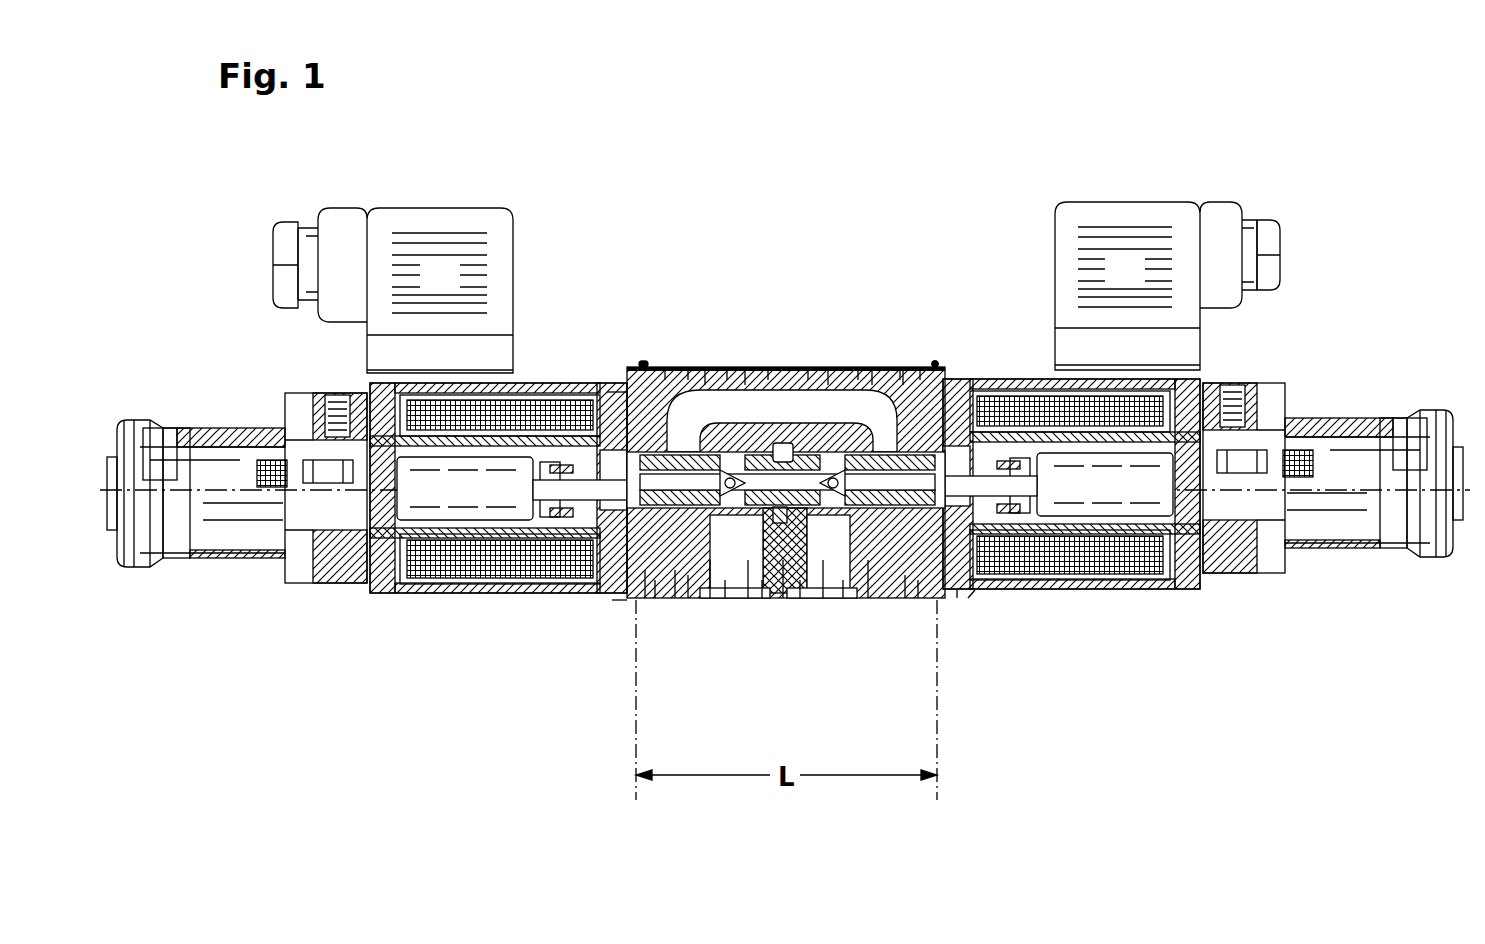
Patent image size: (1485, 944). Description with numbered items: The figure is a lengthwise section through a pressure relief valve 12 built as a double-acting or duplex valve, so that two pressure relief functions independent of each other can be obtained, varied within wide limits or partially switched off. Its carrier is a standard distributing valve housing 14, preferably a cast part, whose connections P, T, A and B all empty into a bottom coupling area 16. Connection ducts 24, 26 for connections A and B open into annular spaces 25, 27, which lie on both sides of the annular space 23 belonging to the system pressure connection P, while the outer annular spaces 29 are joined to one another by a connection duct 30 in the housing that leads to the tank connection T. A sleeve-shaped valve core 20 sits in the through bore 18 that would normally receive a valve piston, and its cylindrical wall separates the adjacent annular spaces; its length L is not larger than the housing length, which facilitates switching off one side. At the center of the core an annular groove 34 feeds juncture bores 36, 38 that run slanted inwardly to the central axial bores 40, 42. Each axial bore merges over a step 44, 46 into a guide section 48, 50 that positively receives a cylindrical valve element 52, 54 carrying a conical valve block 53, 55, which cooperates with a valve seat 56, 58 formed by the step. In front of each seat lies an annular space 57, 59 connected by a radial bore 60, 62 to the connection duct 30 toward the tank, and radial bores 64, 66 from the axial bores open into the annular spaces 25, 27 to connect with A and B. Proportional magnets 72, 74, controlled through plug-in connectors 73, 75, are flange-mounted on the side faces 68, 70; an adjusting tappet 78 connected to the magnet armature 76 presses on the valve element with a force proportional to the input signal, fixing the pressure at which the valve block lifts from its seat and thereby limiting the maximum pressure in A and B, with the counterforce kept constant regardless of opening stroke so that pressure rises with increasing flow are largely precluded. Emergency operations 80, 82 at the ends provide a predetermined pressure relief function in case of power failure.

The pressure relief valve 12 is at (787, 352).
The distributing valve housing 14 is at (874, 368).
The bottom coupling area 16 is at (783, 598).
The through bore 18 is at (725, 598).
The valve core 20 is at (843, 598).
The annular space 23 is at (762, 598).
The connection duct 24 is at (748, 598).
The annular space 25 is at (748, 368).
The connection duct 26 is at (823, 598).
The annular space 27 is at (830, 368).
The annular spaces 29 is at (688, 598).
The connection duct 30 is at (707, 368).
The annular groove 34 is at (800, 598).
The juncture bore 36 is at (768, 368).
The juncture bore 38 is at (809, 368).
The axial bore 40 is at (710, 598).
The axial bore 42 is at (868, 598).
The step 44 is at (689, 368).
The step 46 is at (900, 368).
The guide section 48 is at (645, 598).
The guide section 50 is at (938, 364).
The valve element 52 is at (650, 364).
The valve block 53 is at (655, 598).
The valve element 54 is at (920, 370).
The valve block 55 is at (905, 368).
The valve seat 56 is at (667, 368).
The annular space 57 is at (675, 598).
The valve seat 58 is at (918, 598).
The annular space 59 is at (905, 598).
The radial bore 60 is at (612, 600).
The radial bore 62 is at (975, 596).
The radial bore 64 is at (728, 368).
The radial bore 66 is at (858, 368).
The side face 68 is at (607, 392).
The side face 70 is at (957, 598).
The proportional magnet 72 is at (426, 482).
The plug-in connector 73 is at (450, 222).
The proportional magnet 74 is at (1290, 360).
The plug-in connector 75 is at (1126, 214).
The magnet armature 76 is at (420, 505).
The adjusting tappet 78 is at (565, 540).
The emergency operation 80 is at (250, 545).
The emergency operation 82 is at (1352, 410).